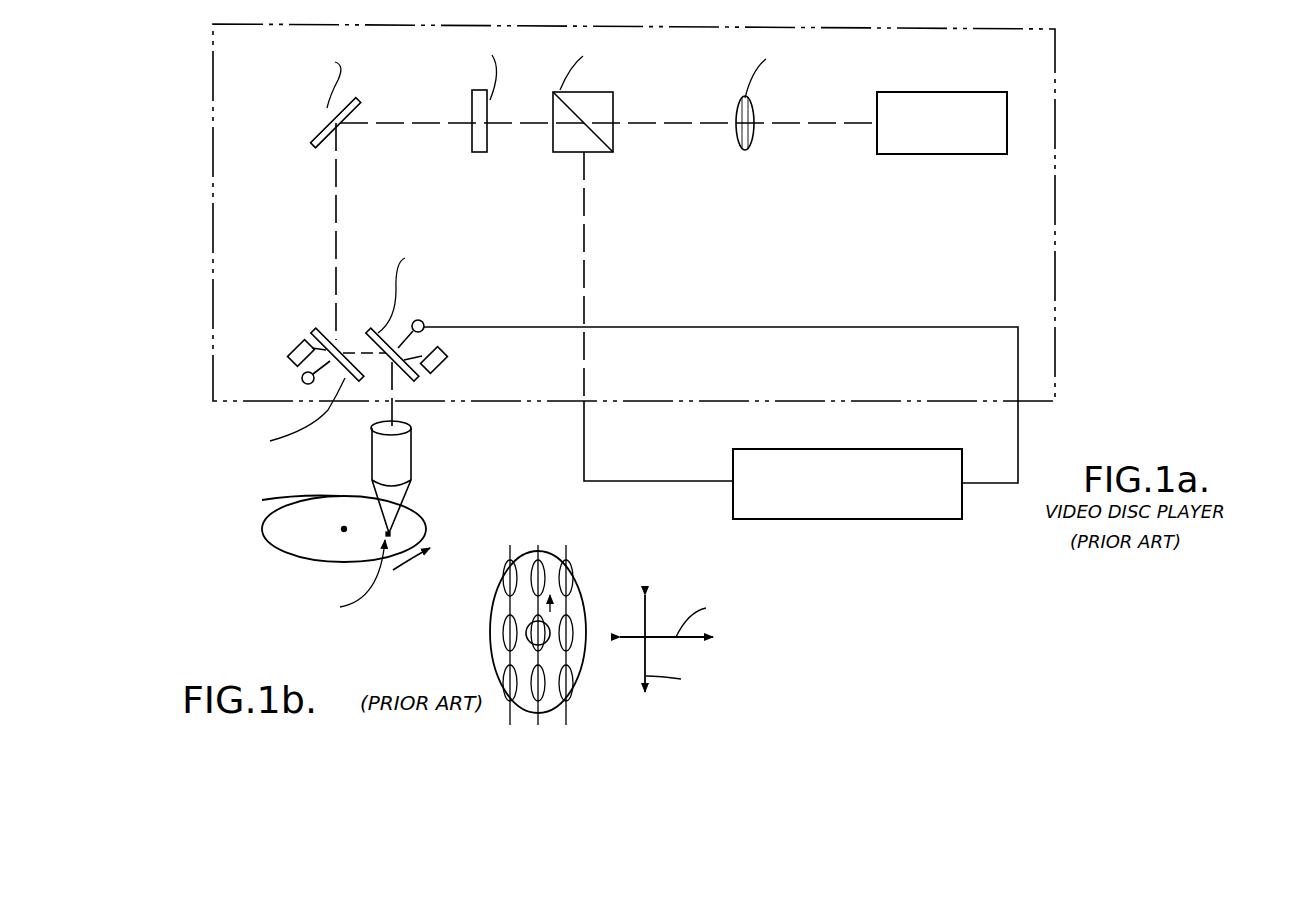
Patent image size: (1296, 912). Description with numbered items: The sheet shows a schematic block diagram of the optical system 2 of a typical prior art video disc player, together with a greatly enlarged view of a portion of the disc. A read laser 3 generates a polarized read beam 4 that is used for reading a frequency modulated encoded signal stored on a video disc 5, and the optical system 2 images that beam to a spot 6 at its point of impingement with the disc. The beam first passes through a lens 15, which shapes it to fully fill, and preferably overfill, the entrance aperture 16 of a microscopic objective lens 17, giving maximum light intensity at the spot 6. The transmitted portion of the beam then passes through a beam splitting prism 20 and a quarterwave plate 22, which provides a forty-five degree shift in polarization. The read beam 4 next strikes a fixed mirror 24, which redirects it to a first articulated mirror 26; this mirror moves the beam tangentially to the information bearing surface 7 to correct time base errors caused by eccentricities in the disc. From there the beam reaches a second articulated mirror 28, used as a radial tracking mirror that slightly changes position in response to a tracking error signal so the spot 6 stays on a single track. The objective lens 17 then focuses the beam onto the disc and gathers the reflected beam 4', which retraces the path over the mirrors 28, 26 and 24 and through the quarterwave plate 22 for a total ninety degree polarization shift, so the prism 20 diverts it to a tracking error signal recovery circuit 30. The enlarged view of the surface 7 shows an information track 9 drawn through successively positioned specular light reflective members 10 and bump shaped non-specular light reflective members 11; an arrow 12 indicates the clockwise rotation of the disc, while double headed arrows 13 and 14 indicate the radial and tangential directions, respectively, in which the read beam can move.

In FIG. 1a, the optical system 2 is at (1060, 70).
In FIG. 1a, the read laser 3 is at (935, 92).
In FIG. 1a, the read beam 4 is at (608, 105).
In FIG. 1a, the reflected beam 4' is at (534, 302).
In FIG. 1a, the video disc 5 is at (262, 529).
In FIG. 1a, the spot 6 is at (400, 527).
In FIG. 1b, the spot 6 is at (526, 645).
In FIG. 1a, the information bearing surface 7 is at (297, 500).
In FIG. 1b, the information bearing surface 7 is at (490, 630).
In FIG. 1b, the information track 9 is at (570, 546).
In FIG. 1b, the specular light reflective members 10 is at (570, 663).
In FIG. 1b, the non-specular light reflective members 11 is at (568, 635).
In FIG. 1a, the arrow 12 is at (395, 558).
In FIG. 1b, the arrow 12 is at (552, 607).
In FIG. 1b, the double headed arrow 13 is at (702, 638).
In FIG. 1b, the double headed arrow 14 is at (647, 612).
In FIG. 1a, the lens 15 is at (745, 152).
In FIG. 1a, the entrance aperture 16 is at (411, 433).
In FIG. 1a, the microscopic objective lens 17 is at (372, 446).
In FIG. 1a, the beam splitting prism 20 is at (612, 102).
In FIG. 1a, the quarterwave plate 22 is at (476, 146).
In FIG. 1a, the fixed mirror 24 is at (320, 127).
In FIG. 1a, the first articulated mirror 26 is at (300, 378).
In FIG. 1a, the second articulated mirror 28 is at (424, 324).
In FIG. 1a, the tracking error signal recovery circuit 30 is at (732, 512).